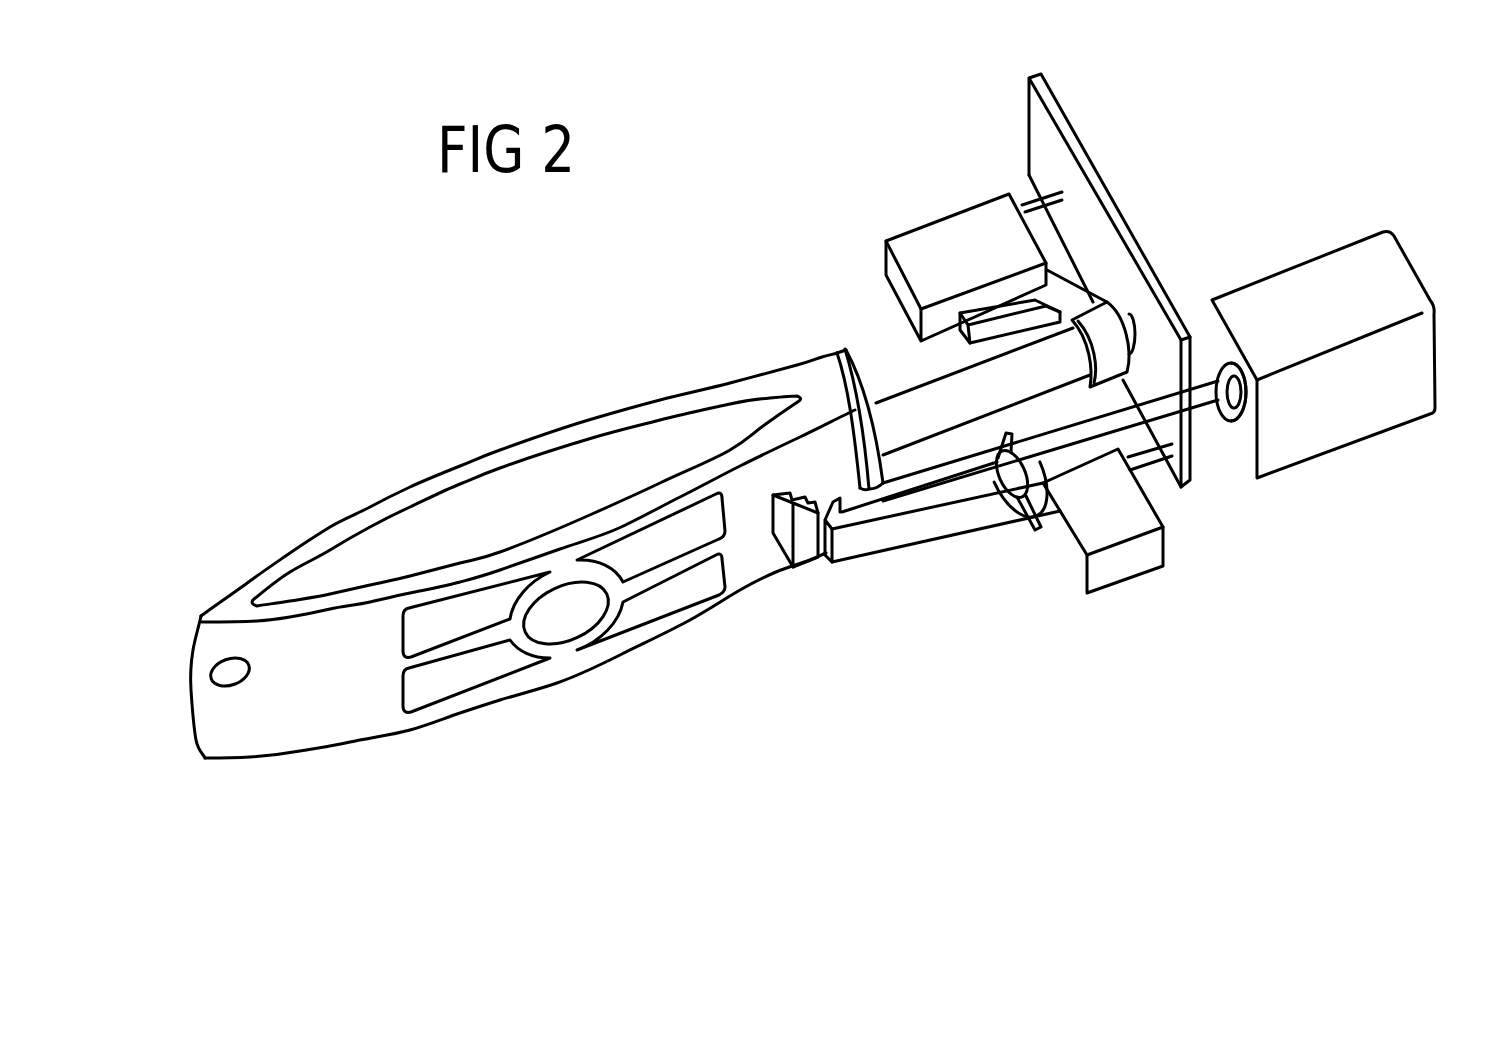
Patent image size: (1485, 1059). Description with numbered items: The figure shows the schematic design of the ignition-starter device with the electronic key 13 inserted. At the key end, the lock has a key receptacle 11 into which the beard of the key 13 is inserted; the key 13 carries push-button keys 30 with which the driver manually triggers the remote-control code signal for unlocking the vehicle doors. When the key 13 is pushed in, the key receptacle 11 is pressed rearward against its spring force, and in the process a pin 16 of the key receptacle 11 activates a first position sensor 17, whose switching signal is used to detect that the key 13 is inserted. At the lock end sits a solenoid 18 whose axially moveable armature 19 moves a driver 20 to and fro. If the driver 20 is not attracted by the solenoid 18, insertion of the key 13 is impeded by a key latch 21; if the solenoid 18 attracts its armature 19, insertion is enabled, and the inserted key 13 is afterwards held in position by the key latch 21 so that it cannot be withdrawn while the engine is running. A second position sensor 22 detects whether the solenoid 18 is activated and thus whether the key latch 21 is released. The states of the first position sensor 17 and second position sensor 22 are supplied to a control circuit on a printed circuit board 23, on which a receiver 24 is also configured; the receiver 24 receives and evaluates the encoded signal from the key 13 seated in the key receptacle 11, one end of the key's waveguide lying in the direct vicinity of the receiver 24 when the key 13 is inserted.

The key receptacle 11 is at (903, 398).
The electronic key 13 is at (418, 443).
The pin 16 is at (978, 314).
The first position sensor 17 is at (985, 222).
The solenoid 18 is at (1363, 417).
The armature 19 is at (1207, 405).
The driver 20 is at (923, 512).
The key latch 21 is at (800, 562).
The second position sensor 22 is at (1129, 555).
The printed circuit board 23 is at (1056, 156).
The receiver 24 is at (1120, 316).
The push-button keys 30 is at (658, 607).